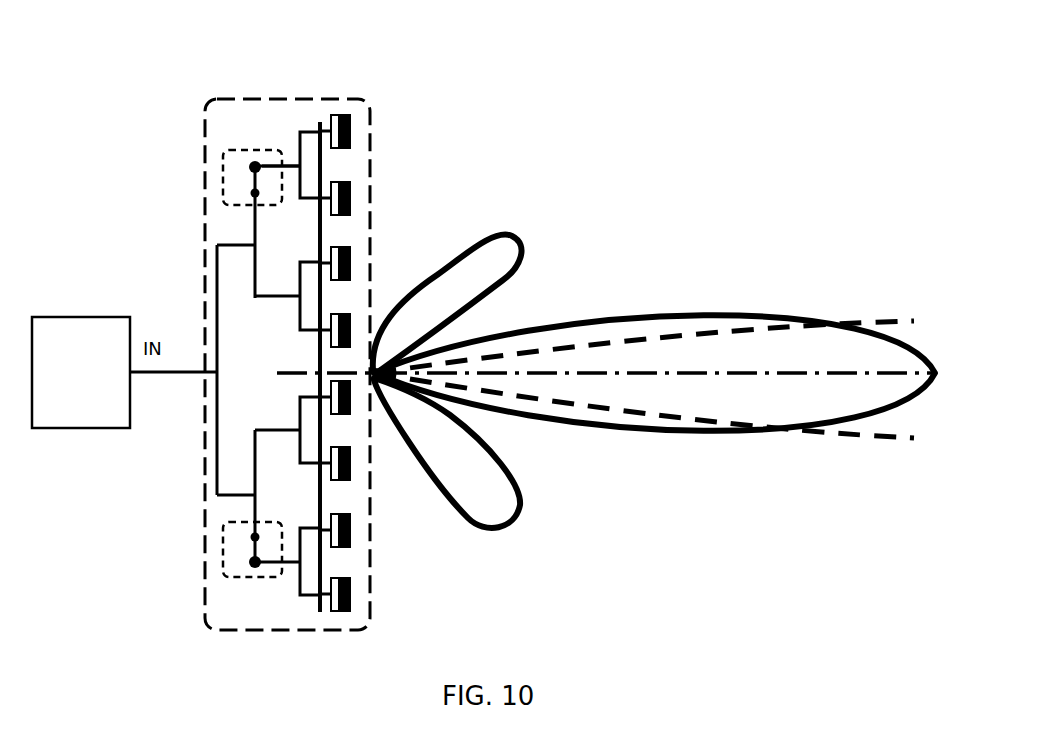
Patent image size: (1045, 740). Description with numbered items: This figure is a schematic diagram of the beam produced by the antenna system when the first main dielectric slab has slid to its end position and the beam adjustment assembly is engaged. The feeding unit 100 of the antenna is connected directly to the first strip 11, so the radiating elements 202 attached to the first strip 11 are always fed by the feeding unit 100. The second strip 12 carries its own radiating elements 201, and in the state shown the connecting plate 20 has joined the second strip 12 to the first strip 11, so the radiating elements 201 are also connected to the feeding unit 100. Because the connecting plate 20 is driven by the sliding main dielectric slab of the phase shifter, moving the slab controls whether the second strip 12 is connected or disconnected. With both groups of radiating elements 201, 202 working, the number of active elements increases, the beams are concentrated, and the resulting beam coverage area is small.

The feeding unit 100 is at (81, 372).
The first strip 11 is at (267, 272).
The second strip 12 is at (290, 170).
The connecting plate 20 is at (216, 176).
The radiating element 201 is at (382, 137).
The radiating element 202 is at (387, 277).